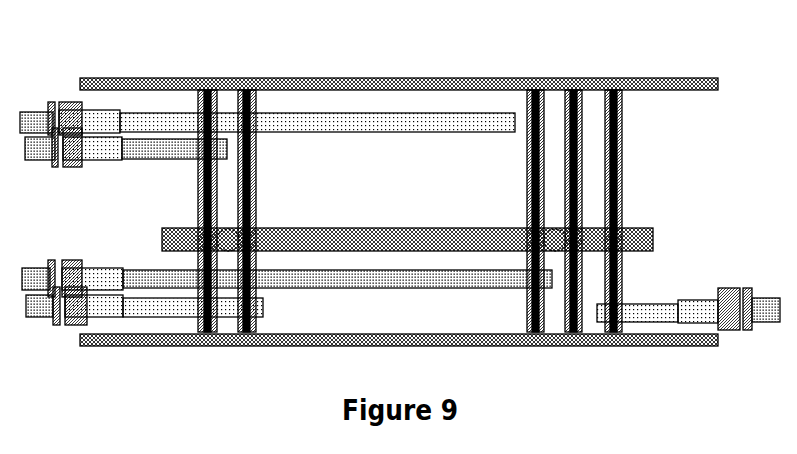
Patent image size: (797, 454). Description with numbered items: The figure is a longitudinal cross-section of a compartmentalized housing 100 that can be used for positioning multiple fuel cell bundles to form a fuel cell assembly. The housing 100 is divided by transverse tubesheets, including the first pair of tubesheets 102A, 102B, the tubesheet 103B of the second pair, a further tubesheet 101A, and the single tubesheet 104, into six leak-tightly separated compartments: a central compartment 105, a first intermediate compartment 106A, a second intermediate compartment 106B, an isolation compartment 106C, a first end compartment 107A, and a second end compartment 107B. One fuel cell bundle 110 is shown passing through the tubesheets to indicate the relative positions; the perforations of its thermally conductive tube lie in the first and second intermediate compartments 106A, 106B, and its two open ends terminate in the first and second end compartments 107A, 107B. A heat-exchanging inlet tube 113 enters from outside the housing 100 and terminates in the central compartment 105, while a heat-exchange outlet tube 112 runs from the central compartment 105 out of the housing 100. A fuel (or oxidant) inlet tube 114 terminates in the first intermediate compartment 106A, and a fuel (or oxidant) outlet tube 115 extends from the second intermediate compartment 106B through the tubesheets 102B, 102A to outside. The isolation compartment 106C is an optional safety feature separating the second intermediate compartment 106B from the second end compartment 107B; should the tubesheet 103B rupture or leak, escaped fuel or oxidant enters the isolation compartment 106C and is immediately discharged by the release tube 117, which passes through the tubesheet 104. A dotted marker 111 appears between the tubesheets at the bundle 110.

The housing 100 is at (388, 78).
The first electrode plate 101A is at (192, 100).
The tubesheet 102A is at (258, 102).
The tubesheet 102B is at (522, 104).
The tubesheet 103B is at (588, 104).
The single tubesheet 104 is at (624, 128).
The central compartment 105 is at (390, 210).
The first intermediate compartment 106A is at (232, 191).
The second intermediate compartment 106B is at (556, 194).
The isolation compartment 106C is at (594, 173).
The first end compartment 107A is at (78, 213).
The second end compartment 107B is at (715, 300).
The fuel cell bundle 110 is at (412, 228).
The spacer 111 is at (229, 228).
The heat-exchange outlet tube 112 is at (337, 120).
The heat-exchanging inlet tube 113 is at (263, 307).
The fuel (or oxidant) inlet tube 114 is at (170, 156).
The fuel (or oxidant) outlet tube 115 is at (468, 288).
The release tube 117 is at (640, 322).